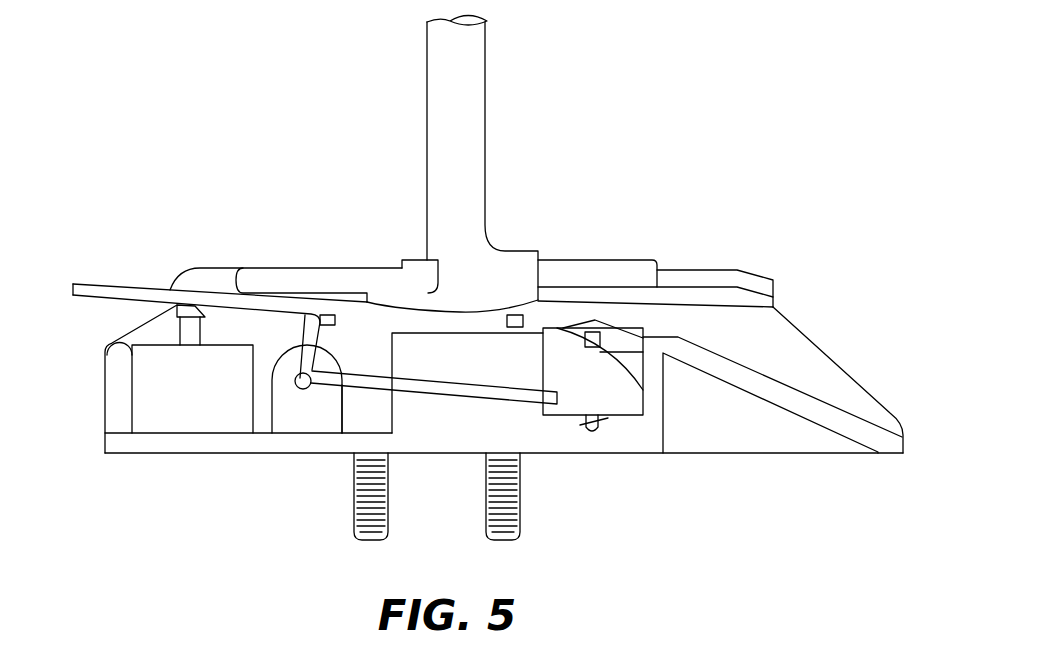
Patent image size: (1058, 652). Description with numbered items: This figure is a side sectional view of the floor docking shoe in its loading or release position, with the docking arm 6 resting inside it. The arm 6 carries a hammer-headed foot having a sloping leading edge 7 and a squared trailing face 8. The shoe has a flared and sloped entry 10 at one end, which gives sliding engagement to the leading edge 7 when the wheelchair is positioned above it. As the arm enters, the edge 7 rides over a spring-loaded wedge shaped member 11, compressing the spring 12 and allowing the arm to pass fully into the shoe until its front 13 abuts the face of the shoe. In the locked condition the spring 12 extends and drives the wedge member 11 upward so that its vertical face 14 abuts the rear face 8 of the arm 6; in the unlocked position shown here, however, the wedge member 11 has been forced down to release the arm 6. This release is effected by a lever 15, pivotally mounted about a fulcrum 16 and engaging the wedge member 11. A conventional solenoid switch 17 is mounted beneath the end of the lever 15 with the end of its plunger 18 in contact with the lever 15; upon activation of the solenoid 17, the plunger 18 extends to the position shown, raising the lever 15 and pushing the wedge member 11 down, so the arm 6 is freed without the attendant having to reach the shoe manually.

The docking arm 6 is at (460, 148).
The sloping leading edge 7 is at (395, 302).
The squared trailing face 8 is at (542, 277).
The flared and sloped entry 10 is at (800, 347).
The wedge shaped member 11 is at (623, 397).
The spring 12 is at (580, 425).
The front 13 is at (452, 272).
The vertical face 14 is at (540, 357).
The lever 15 is at (142, 287).
The fulcrum 16 is at (310, 395).
The solenoid switch 17 is at (171, 410).
The plunger 18 is at (148, 303).